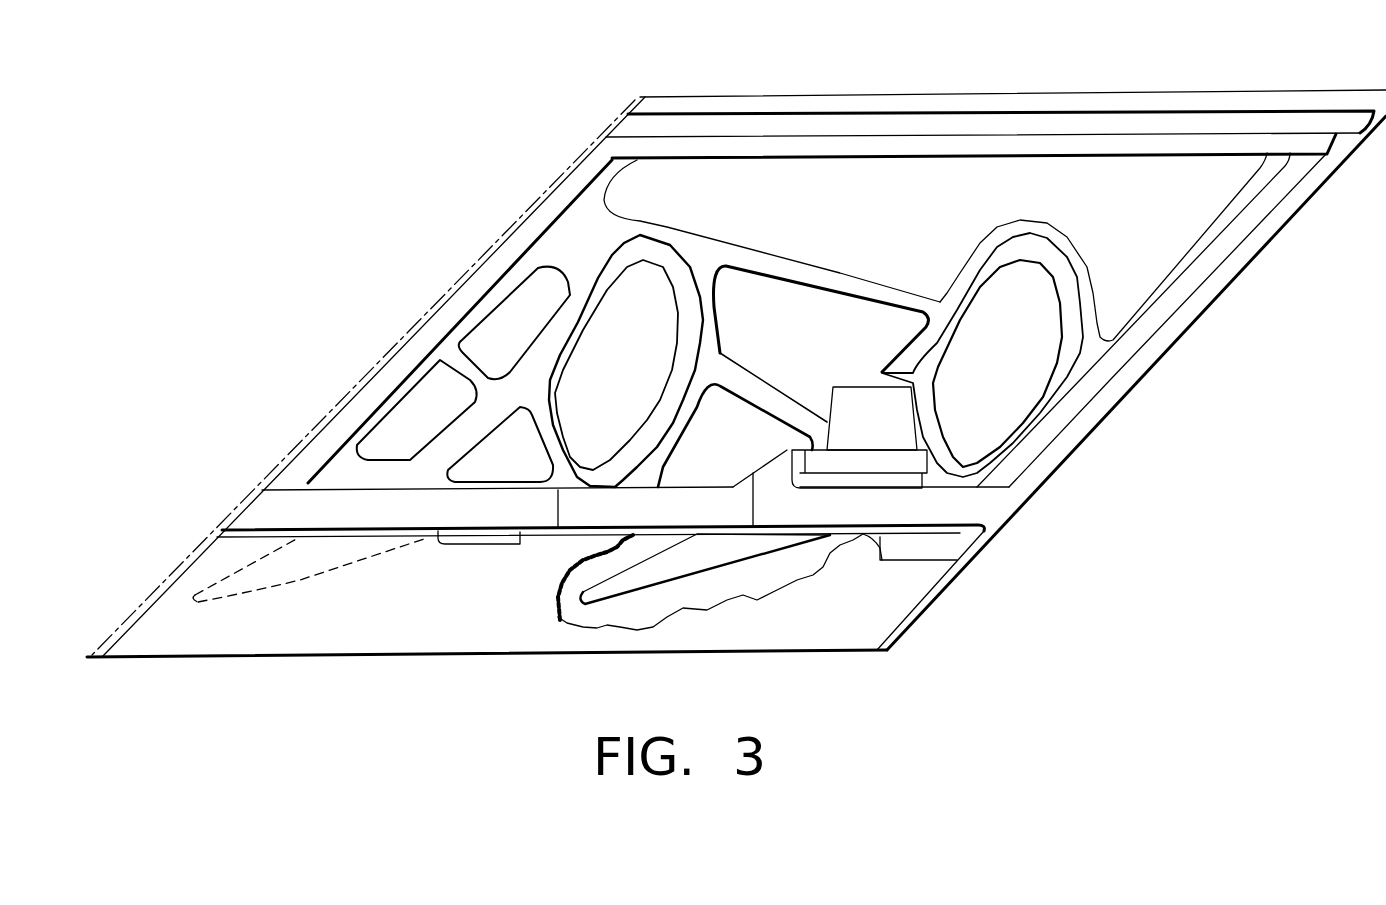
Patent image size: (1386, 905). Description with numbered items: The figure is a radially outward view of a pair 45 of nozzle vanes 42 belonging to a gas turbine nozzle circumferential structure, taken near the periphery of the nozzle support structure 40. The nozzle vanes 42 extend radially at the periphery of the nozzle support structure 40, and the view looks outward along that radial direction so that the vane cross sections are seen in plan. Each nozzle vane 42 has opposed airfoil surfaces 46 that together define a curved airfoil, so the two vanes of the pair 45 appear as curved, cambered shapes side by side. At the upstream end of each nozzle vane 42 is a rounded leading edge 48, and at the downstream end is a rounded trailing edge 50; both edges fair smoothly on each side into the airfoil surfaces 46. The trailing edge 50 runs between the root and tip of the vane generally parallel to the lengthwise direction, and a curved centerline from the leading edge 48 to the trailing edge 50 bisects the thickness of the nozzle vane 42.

The nozzle support structure 40 is at (710, 158).
The nozzle vane 42 is at (372, 565).
The pair of nozzle vanes 45 is at (848, 208).
The airfoil surfaces 46 is at (942, 334).
The leading edge 48 is at (640, 237).
The trailing edge 50 is at (147, 597).